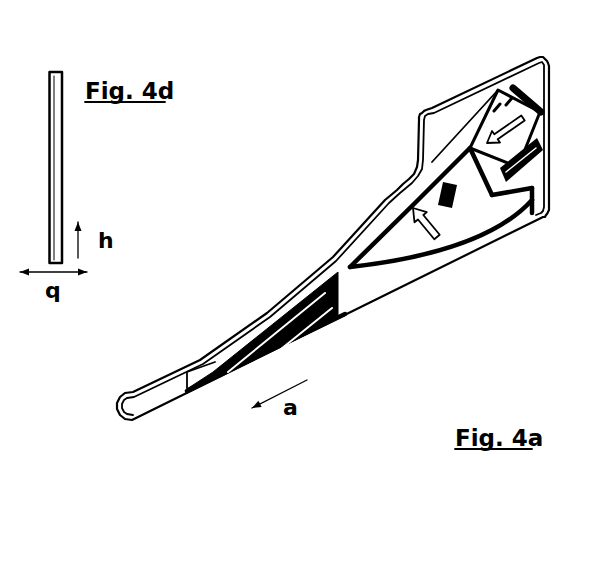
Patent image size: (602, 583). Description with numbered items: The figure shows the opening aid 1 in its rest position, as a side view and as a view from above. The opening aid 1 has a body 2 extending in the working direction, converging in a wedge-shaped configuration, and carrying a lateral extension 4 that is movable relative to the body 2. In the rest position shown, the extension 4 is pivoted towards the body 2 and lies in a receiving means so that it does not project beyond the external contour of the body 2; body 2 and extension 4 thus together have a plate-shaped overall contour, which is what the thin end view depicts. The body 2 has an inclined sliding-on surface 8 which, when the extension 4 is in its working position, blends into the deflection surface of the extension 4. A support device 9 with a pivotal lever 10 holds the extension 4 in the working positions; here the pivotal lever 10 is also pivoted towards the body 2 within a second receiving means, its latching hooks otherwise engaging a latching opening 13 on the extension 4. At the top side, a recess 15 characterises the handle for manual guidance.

In FIG. 4A, the opening aid 1 is at (343, 72).
In FIG. 4D, the opening aid 1 is at (50, 68).
In FIG. 4A, the body 2 is at (167, 363).
In FIG. 4D, the body 2 is at (63, 71).
In FIG. 4A, the lateral extension 4 is at (470, 240).
In FIG. 4A, the inclined sliding-on surface 8 is at (260, 312).
In FIG. 4A, the support device 9 is at (514, 90).
In FIG. 4A, the pivotal lever 10 is at (533, 88).
In FIG. 4A, the latching opening 13 is at (458, 203).
In FIG. 4A, the recess 15 is at (447, 98).